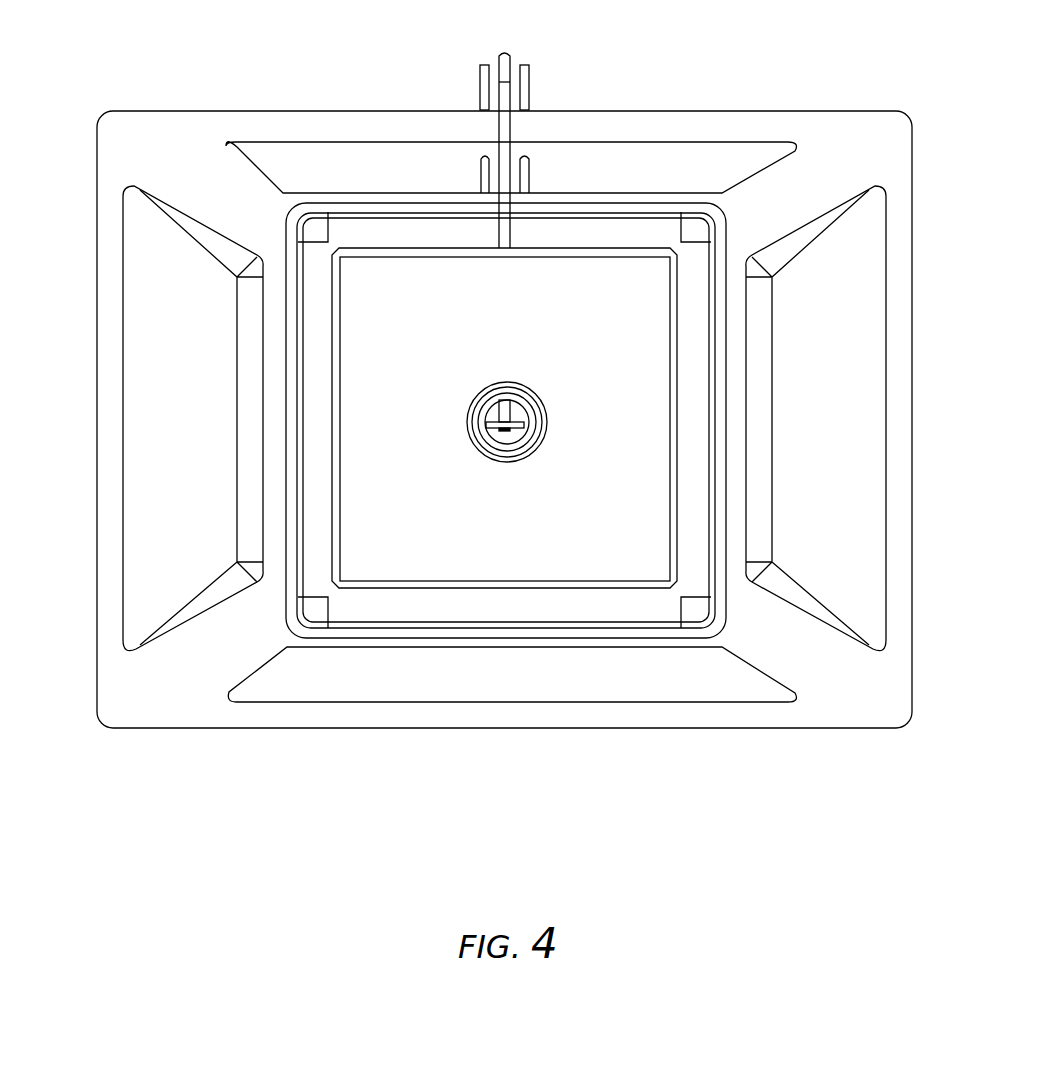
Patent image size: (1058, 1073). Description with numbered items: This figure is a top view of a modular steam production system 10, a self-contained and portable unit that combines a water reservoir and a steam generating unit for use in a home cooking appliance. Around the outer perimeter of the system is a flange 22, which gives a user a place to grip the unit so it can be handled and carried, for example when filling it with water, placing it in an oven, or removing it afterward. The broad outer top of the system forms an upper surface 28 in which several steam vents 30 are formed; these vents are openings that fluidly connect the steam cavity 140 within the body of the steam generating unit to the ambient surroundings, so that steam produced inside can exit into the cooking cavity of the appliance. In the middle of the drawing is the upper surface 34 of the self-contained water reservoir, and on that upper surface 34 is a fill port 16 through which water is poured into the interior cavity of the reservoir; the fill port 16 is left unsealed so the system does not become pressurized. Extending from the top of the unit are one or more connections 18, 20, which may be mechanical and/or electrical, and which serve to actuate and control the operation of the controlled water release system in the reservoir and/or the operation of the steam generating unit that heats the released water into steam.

The modular steam production system 10 is at (807, 846).
The fill port 16 is at (504, 400).
The connection 18 is at (504, 52).
The connection 20 is at (480, 88).
The flange 22 is at (97, 162).
The upper surface 28 is at (210, 170).
The steam vent 30 is at (347, 142).
The upper surface 34 is at (610, 412).
The steam cavity 140 is at (190, 429).